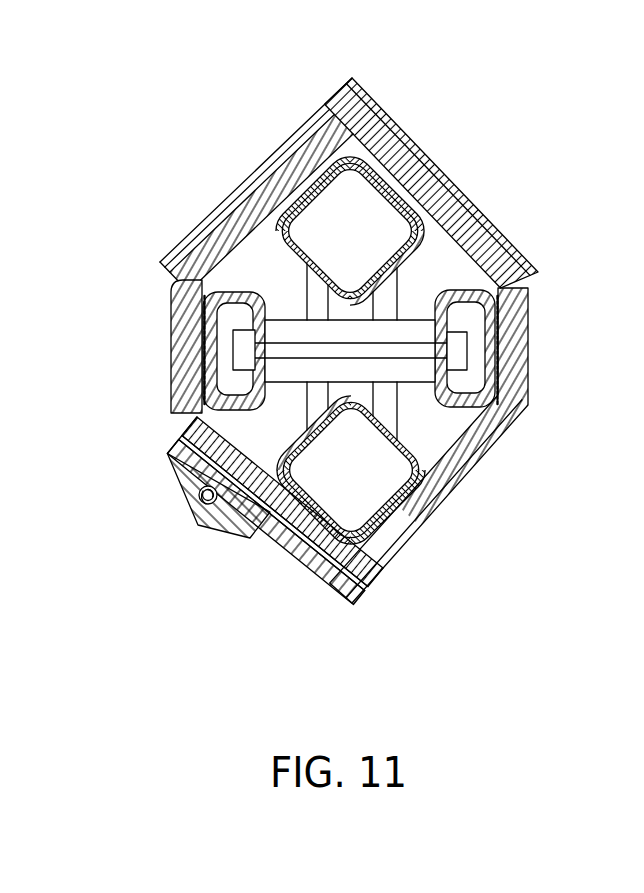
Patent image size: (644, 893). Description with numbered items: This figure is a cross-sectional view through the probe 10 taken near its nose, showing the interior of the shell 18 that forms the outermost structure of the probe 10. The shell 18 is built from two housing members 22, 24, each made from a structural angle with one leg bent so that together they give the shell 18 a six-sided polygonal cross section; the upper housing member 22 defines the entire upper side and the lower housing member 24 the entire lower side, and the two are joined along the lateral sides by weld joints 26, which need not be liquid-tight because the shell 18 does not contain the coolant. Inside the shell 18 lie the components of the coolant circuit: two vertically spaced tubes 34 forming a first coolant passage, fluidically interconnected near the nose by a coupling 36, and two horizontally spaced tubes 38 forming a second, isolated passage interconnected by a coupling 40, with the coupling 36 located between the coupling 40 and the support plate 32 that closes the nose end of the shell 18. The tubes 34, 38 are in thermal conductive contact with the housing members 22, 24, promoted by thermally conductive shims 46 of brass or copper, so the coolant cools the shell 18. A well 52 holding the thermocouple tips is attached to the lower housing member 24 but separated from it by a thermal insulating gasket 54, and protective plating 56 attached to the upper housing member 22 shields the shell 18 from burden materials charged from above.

The probe 10 is at (172, 131).
The shell 18 is at (560, 387).
The housing member 22 is at (250, 210).
The housing member 24 is at (335, 565).
The weld joints 26 is at (197, 417).
The support plate 32 is at (250, 263).
The tubes 34 is at (372, 168).
The coupling 36 is at (315, 293).
The tubes 38 is at (203, 333).
The coupling 40 is at (407, 372).
The thermally conductive shims 46 is at (323, 157).
The well 52 is at (183, 505).
The thermal insulating gasket 54 is at (267, 525).
The protective plating 56 is at (277, 157).